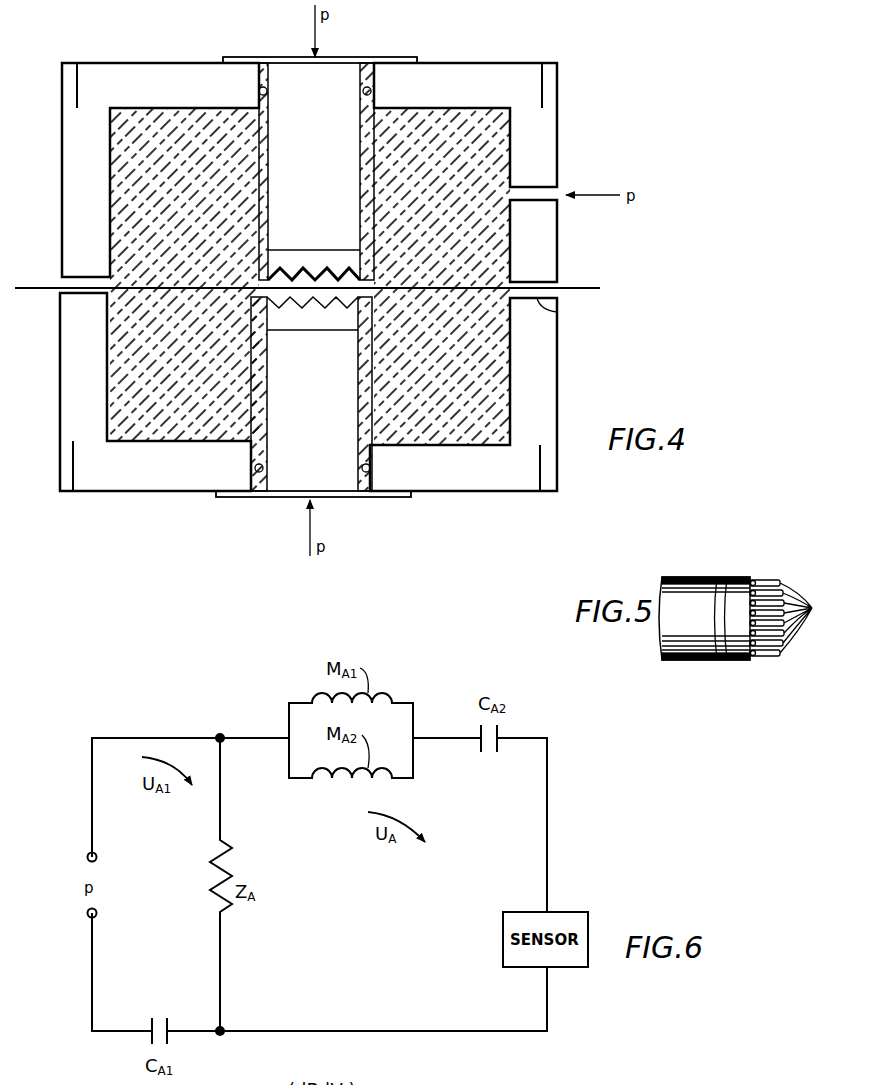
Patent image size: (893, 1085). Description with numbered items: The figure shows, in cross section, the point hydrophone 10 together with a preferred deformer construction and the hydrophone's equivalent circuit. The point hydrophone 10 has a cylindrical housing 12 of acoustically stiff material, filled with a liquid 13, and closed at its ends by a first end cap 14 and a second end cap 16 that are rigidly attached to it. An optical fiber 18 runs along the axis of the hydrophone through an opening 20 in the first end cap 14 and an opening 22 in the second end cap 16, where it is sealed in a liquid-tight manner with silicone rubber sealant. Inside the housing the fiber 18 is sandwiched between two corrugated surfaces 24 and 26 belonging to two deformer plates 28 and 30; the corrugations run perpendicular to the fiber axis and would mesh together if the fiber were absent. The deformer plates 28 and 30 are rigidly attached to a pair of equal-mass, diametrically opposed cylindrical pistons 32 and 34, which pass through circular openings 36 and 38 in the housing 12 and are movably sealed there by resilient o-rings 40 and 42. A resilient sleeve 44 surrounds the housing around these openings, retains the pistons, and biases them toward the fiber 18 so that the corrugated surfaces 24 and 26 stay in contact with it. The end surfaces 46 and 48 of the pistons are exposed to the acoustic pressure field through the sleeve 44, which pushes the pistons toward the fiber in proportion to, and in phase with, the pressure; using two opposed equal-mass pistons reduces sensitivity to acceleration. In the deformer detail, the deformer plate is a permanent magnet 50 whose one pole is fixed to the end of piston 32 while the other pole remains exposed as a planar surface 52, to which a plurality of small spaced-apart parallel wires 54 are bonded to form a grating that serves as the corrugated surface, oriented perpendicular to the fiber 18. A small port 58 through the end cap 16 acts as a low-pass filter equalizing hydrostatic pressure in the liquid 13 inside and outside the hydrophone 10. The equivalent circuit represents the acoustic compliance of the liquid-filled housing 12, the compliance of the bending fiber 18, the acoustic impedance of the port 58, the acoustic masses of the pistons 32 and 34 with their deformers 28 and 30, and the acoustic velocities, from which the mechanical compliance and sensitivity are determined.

In FIG. 4, the point hydrophone 10 is at (598, 76).
In FIG. 4, the cylindrical housing 12 is at (121, 77).
In FIG. 4, the liquid 13 is at (208, 200).
In FIG. 4, the first end cap 14 is at (72, 180).
In FIG. 4, the second end cap 16 is at (547, 398).
In FIG. 4, the optical fiber 18 is at (587, 288).
In FIG. 4, the opening 20 is at (73, 296).
In FIG. 4, the opening 22 is at (557, 312).
In FIG. 4, the corrugated surface 24 is at (330, 268).
In FIG. 4, the corrugated surface 26 is at (328, 306).
In FIG. 4, the deformer plate 28 is at (300, 258).
In FIG. 4, the deformer plate 30 is at (305, 326).
In FIG. 4, the piston 32 is at (320, 166).
In FIG. 5, the piston 32 is at (698, 619).
In FIG. 4, the piston 34 is at (314, 395).
In FIG. 4, the circular opening 36 is at (257, 80).
In FIG. 4, the circular opening 38 is at (372, 474).
In FIG. 4, the o-ring 40 is at (371, 92).
In FIG. 4, the o-ring 42 is at (255, 468).
In FIG. 4, the resilient sleeve 44 is at (400, 57).
In FIG. 4, the end surface 46 is at (354, 60).
In FIG. 4, the end surface 48 is at (348, 497).
In FIG. 5, the permanent magnet 50 is at (745, 577).
In FIG. 5, the planar surface 52 is at (793, 603).
In FIG. 5, the parallel wires 54 is at (760, 579).
In FIG. 4, the port 58 is at (560, 190).